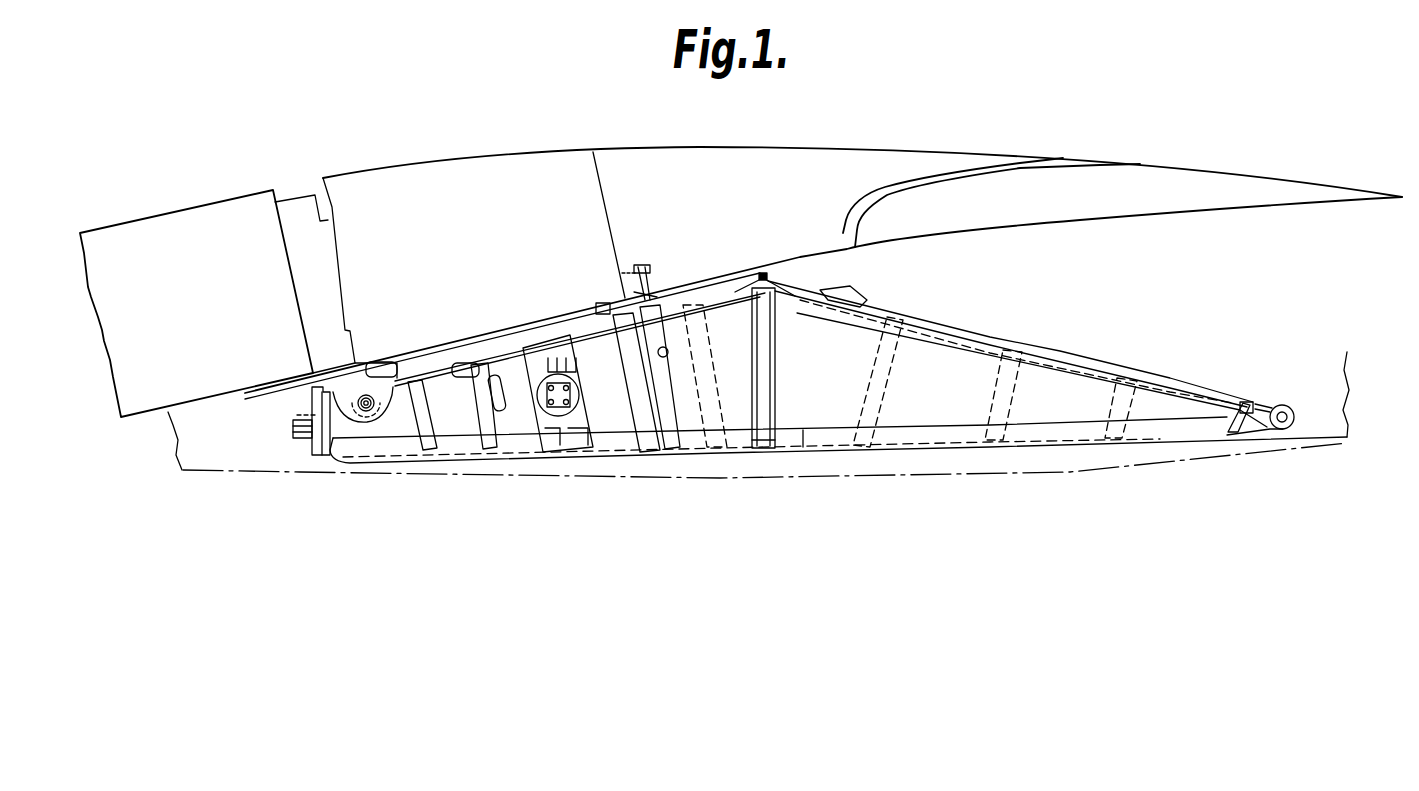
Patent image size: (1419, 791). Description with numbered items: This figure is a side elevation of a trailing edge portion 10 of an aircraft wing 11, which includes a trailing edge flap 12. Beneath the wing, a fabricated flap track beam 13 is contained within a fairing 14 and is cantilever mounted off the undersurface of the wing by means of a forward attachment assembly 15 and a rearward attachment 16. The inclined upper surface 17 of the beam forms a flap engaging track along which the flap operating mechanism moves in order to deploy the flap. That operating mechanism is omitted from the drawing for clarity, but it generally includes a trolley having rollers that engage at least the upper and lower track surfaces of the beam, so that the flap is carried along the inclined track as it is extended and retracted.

The trailing edge portion 10 is at (498, 180).
The aircraft wing 11 is at (185, 242).
The trailing edge flap 12 is at (918, 187).
The flap track beam 13 is at (987, 450).
The fairing 14 is at (793, 486).
The forward attachment assembly 15 is at (300, 390).
The rearward attachment 16 is at (650, 291).
The inclined upper surface 17 is at (1092, 360).